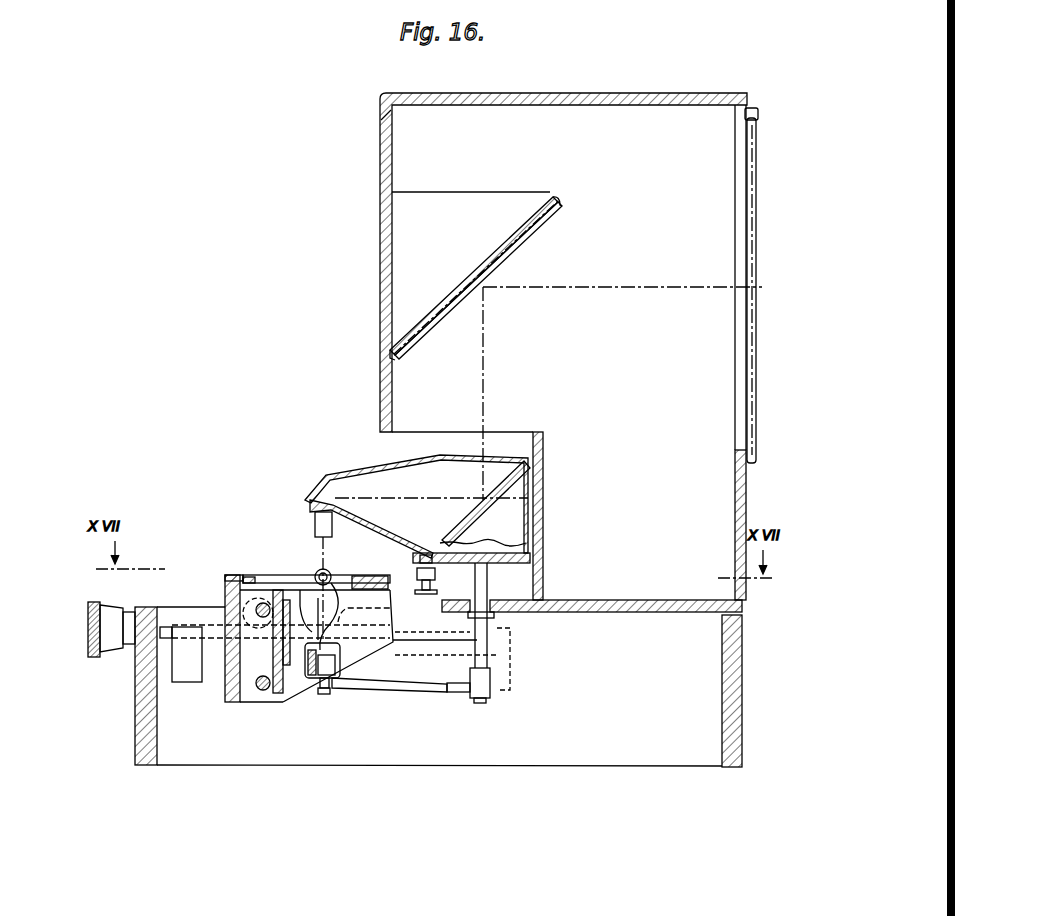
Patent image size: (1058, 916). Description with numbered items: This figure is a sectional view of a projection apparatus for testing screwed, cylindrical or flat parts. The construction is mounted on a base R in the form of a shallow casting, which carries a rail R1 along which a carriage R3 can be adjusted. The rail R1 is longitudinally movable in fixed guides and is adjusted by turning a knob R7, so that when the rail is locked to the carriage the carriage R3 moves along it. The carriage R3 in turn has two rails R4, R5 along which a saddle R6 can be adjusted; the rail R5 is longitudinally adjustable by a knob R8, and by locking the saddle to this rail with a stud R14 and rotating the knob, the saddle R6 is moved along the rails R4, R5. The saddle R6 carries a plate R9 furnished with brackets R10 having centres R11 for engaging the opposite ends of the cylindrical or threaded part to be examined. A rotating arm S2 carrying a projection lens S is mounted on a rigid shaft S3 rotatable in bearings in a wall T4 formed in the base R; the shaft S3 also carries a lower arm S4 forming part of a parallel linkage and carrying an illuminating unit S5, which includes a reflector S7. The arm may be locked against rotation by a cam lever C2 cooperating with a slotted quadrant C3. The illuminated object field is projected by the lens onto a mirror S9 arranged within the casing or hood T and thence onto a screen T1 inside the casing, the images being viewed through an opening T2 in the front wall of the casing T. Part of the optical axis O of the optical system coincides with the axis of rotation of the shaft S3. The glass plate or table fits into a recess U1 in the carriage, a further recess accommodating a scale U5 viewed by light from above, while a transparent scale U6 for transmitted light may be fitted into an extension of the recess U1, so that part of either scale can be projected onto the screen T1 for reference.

The casing T is at (562, 93).
The screen T1 is at (735, 398).
The opening T2 is at (382, 118).
The wall T4 is at (641, 605).
The projection lens S is at (316, 528).
The rotating arm S2 is at (395, 462).
The rigid shaft S3 is at (517, 558).
The lower arm S4 is at (388, 683).
The illuminating unit S5 is at (312, 660).
The reflector S7 is at (320, 655).
The mirror S9 is at (425, 308).
The optical axis O is at (485, 410).
The cam lever C2 is at (425, 582).
The slotted quadrant C3 is at (418, 562).
The base R is at (738, 733).
The rail R1 is at (240, 612).
The carriage R3 is at (292, 694).
The rail R4 is at (262, 686).
The rail R5 is at (182, 666).
The saddle R6 is at (272, 600).
The knob R7 is at (108, 650).
The knob R8 is at (270, 635).
The plate R9 is at (288, 600).
The bracket R10 is at (318, 615).
The centre R11 is at (325, 570).
The stud R14 is at (268, 600).
The recess U1 is at (247, 578).
The scale U5 is at (227, 577).
The transparent scale U6 is at (365, 578).